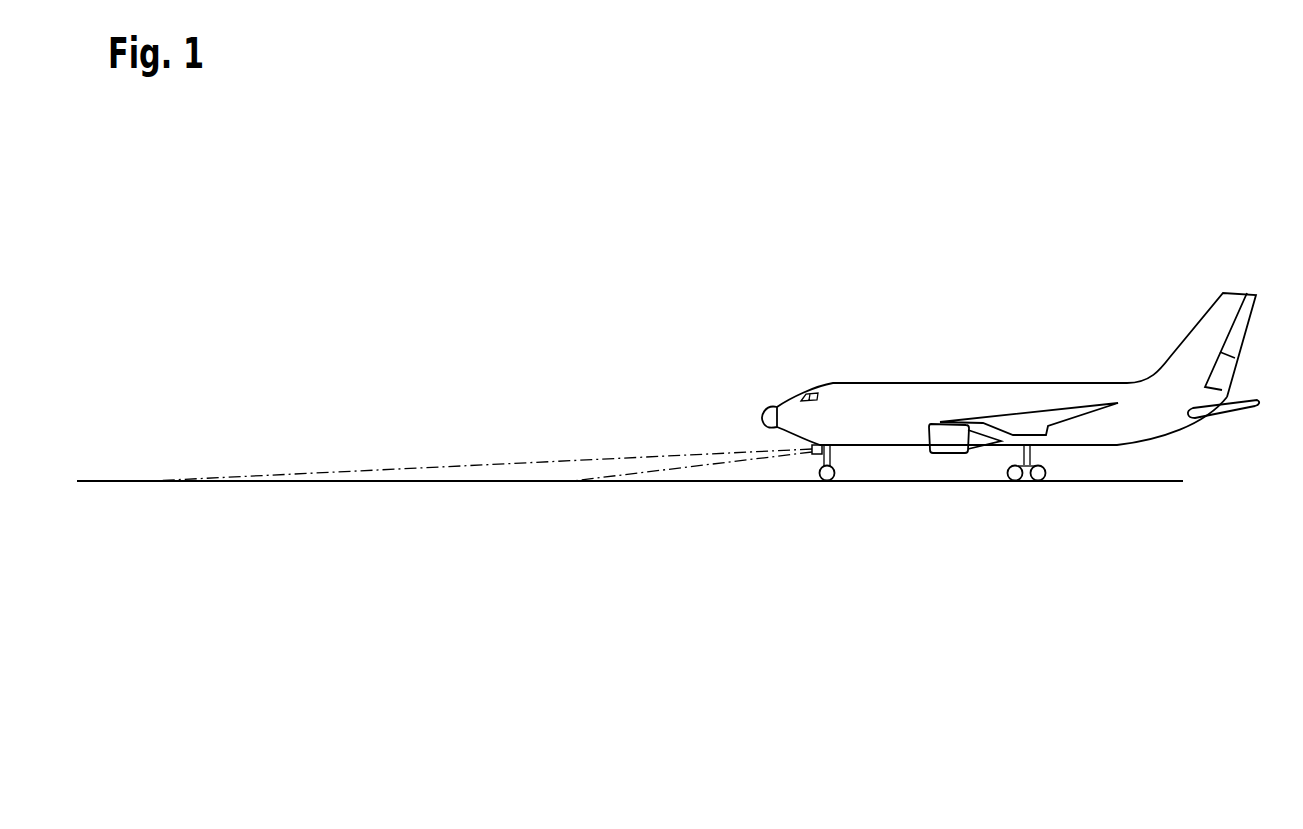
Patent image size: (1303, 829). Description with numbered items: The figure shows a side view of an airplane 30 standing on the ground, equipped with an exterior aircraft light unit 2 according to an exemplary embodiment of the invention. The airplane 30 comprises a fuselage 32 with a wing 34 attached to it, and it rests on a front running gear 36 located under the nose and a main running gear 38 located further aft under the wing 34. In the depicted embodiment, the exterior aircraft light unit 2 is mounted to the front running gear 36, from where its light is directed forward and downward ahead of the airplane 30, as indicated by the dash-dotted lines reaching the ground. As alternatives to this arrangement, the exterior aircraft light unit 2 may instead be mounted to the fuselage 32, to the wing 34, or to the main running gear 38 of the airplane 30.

The exterior aircraft light unit 2 is at (820, 445).
The airplane 30 is at (704, 413).
The fuselage 32 is at (933, 392).
The wing 34 is at (1063, 413).
The front running gear 36 is at (847, 483).
The main running gear 38 is at (998, 483).